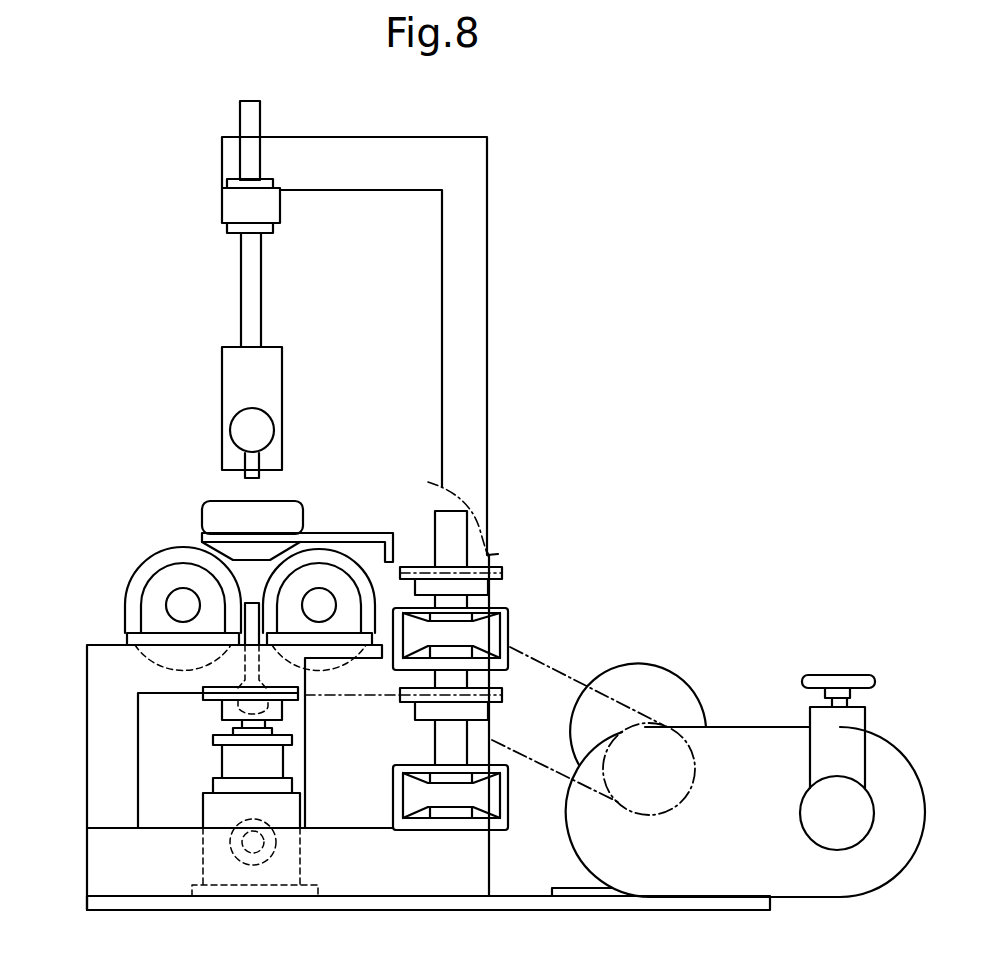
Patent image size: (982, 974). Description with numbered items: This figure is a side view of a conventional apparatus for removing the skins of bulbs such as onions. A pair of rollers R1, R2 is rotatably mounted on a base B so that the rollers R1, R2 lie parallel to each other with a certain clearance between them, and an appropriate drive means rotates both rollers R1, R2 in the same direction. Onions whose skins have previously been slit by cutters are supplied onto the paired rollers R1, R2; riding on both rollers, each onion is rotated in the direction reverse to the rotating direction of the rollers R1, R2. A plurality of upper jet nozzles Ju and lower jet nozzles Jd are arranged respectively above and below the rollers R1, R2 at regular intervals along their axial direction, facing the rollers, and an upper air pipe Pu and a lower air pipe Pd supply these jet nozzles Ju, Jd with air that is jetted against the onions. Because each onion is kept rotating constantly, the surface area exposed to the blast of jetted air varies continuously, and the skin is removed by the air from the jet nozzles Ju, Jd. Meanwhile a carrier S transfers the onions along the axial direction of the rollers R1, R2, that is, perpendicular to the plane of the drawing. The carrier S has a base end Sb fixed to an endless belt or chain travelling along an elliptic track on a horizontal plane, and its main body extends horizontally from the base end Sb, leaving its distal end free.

The carrier S is at (218, 505).
The upper air pipe Pu is at (263, 413).
The upper jet nozzles Ju is at (260, 460).
The lower jet nozzles Jd is at (253, 602).
The roller R1 is at (348, 559).
The roller R2 is at (143, 560).
The base end of the carrier Sb is at (387, 535).
The lower air pipe Pd is at (267, 705).
The base B is at (85, 875).